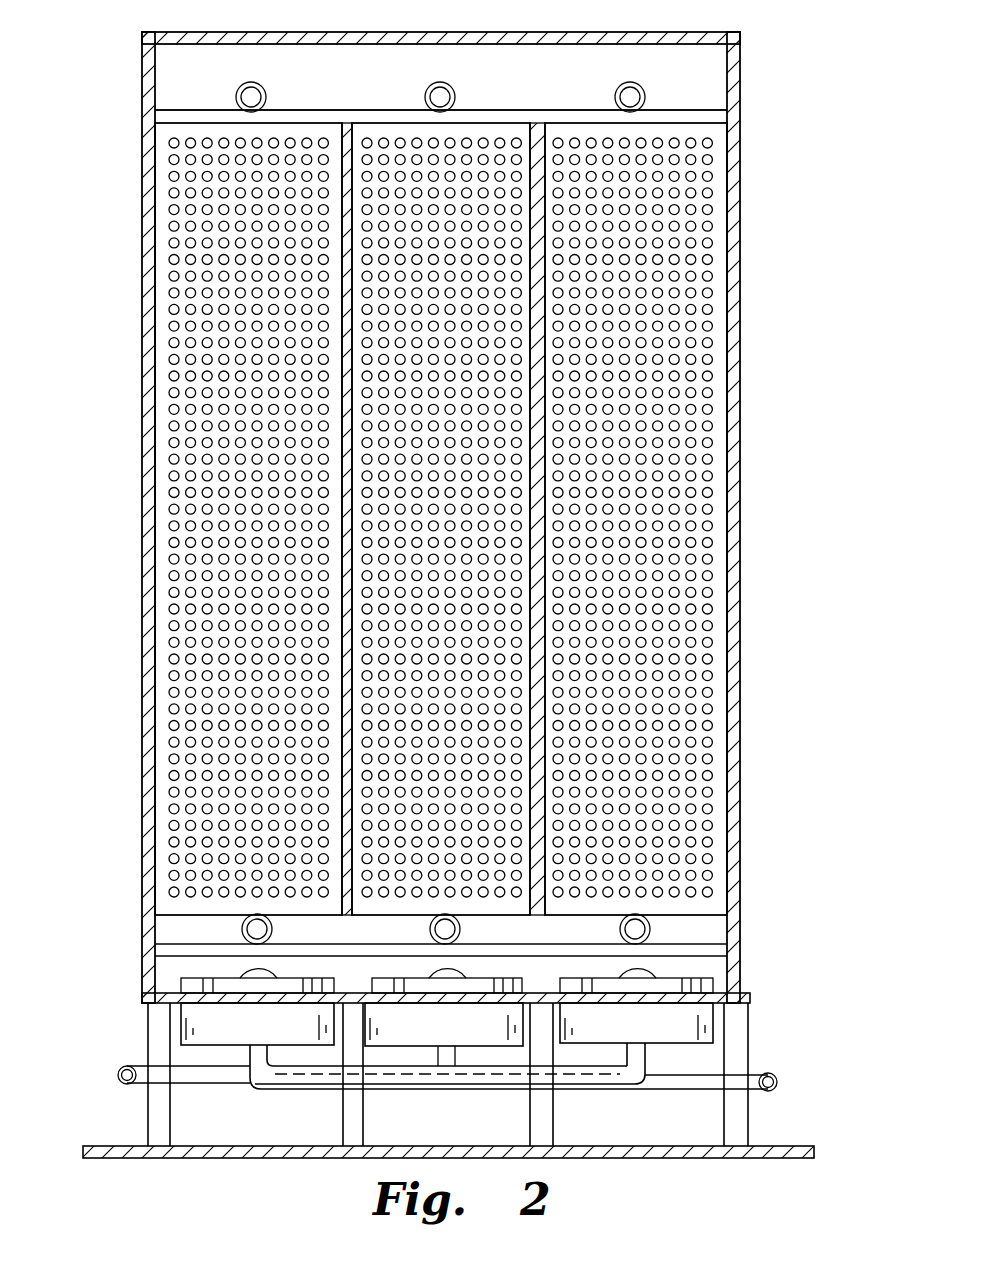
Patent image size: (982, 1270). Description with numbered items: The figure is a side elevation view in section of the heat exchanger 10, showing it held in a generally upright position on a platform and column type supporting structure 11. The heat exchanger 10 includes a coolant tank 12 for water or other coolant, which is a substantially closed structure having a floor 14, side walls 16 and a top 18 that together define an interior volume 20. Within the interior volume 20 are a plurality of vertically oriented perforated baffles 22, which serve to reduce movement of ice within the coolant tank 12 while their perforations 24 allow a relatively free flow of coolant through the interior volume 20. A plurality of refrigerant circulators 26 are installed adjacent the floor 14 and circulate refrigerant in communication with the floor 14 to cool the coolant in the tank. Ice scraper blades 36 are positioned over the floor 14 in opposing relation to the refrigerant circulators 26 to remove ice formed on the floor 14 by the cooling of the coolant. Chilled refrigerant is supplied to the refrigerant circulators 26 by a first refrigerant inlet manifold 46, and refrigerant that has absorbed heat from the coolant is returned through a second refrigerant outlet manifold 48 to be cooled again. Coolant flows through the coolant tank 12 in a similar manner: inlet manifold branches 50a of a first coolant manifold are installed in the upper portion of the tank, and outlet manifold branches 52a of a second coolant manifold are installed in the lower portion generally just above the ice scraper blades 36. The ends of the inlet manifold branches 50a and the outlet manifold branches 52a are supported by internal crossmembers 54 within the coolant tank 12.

The heat exchanger 10 is at (410, 1041).
The supporting structure 11 is at (90, 1118).
The coolant tank 12 is at (439, 504).
The floor 14 is at (737, 986).
The side walls 16 is at (143, 535).
The top 18 is at (300, 33).
The interior volume 20 is at (516, 76).
The perforated baffles 22 is at (330, 302).
The perforations 24 is at (205, 432).
The refrigerant circulators 26 is at (183, 1025).
The ice scraper blades 36 is at (183, 984).
The first refrigerant inlet manifold 46 is at (778, 1081).
The second refrigerant outlet manifold 48 is at (118, 1074).
The inlet manifold branches 50a is at (426, 95).
The outlet manifold branches 52a is at (243, 924).
The internal crossmembers 54 is at (183, 110).